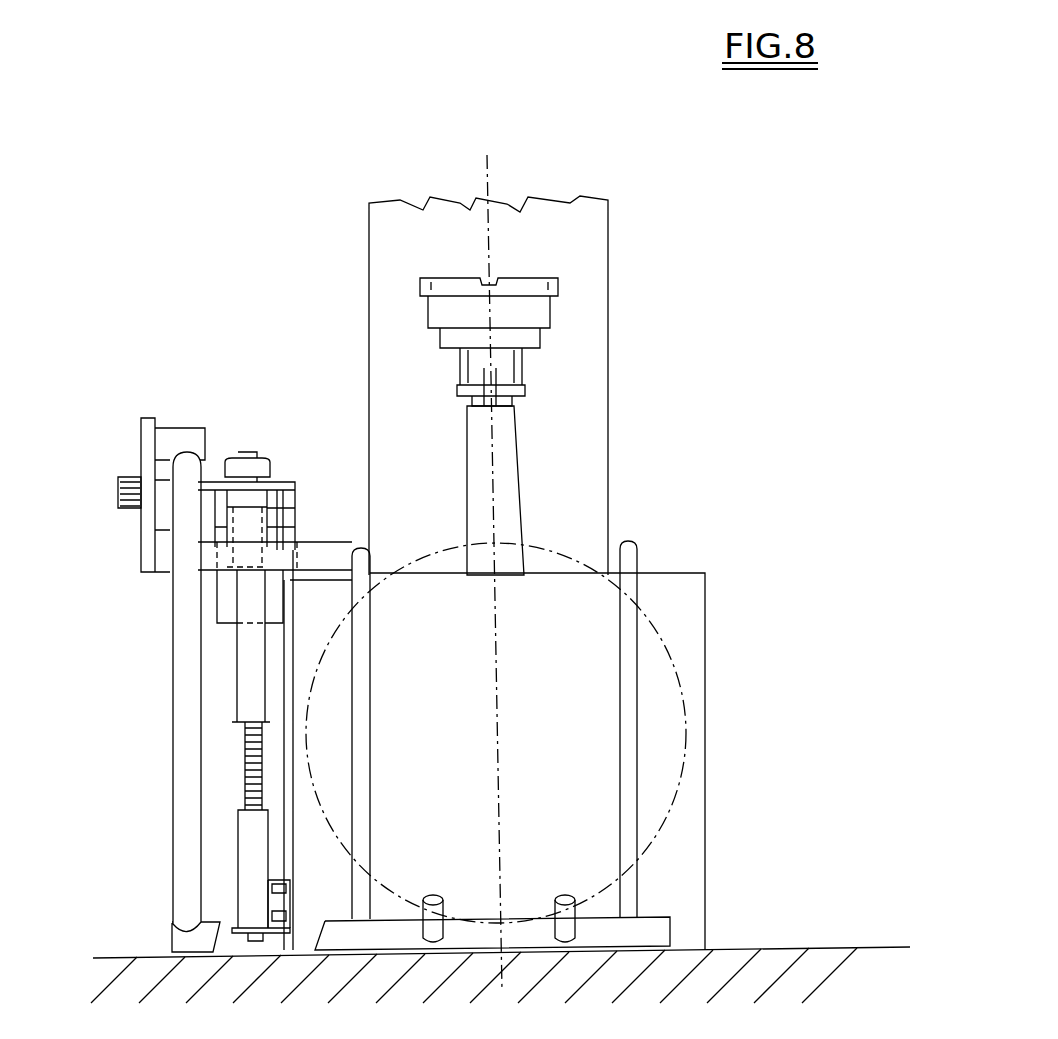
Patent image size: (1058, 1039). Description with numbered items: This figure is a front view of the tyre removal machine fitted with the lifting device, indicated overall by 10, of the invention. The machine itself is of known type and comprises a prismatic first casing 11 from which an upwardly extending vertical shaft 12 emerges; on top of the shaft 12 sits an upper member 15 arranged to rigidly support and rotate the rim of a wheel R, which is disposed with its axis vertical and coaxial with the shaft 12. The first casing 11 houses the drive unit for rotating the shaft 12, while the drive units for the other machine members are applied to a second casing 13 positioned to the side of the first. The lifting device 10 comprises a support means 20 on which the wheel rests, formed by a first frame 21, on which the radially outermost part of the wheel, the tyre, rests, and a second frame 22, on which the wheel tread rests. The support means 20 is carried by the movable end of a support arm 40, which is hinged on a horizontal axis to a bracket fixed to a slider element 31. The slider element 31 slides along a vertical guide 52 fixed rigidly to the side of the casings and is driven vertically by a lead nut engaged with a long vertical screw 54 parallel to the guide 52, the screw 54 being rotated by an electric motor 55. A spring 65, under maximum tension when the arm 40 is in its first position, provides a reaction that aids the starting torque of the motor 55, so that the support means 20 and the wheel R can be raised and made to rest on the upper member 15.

The tool changer / positioning assembly 10 is at (180, 422).
The first casing 11 is at (702, 606).
The vertical shaft 12 is at (518, 488).
The second casing 13 is at (364, 233).
The upper member 15 is at (550, 312).
The support means 20 is at (672, 920).
The first frame 21 is at (634, 552).
The second frame 22 is at (564, 896).
The slider element 31 is at (252, 518).
The support arm 40 is at (173, 878).
The vertical guide 52 is at (238, 668).
The vertical screw 54 is at (245, 745).
The electric motor 55 is at (220, 603).
The spring 65 is at (125, 482).
The wheel R is at (690, 690).